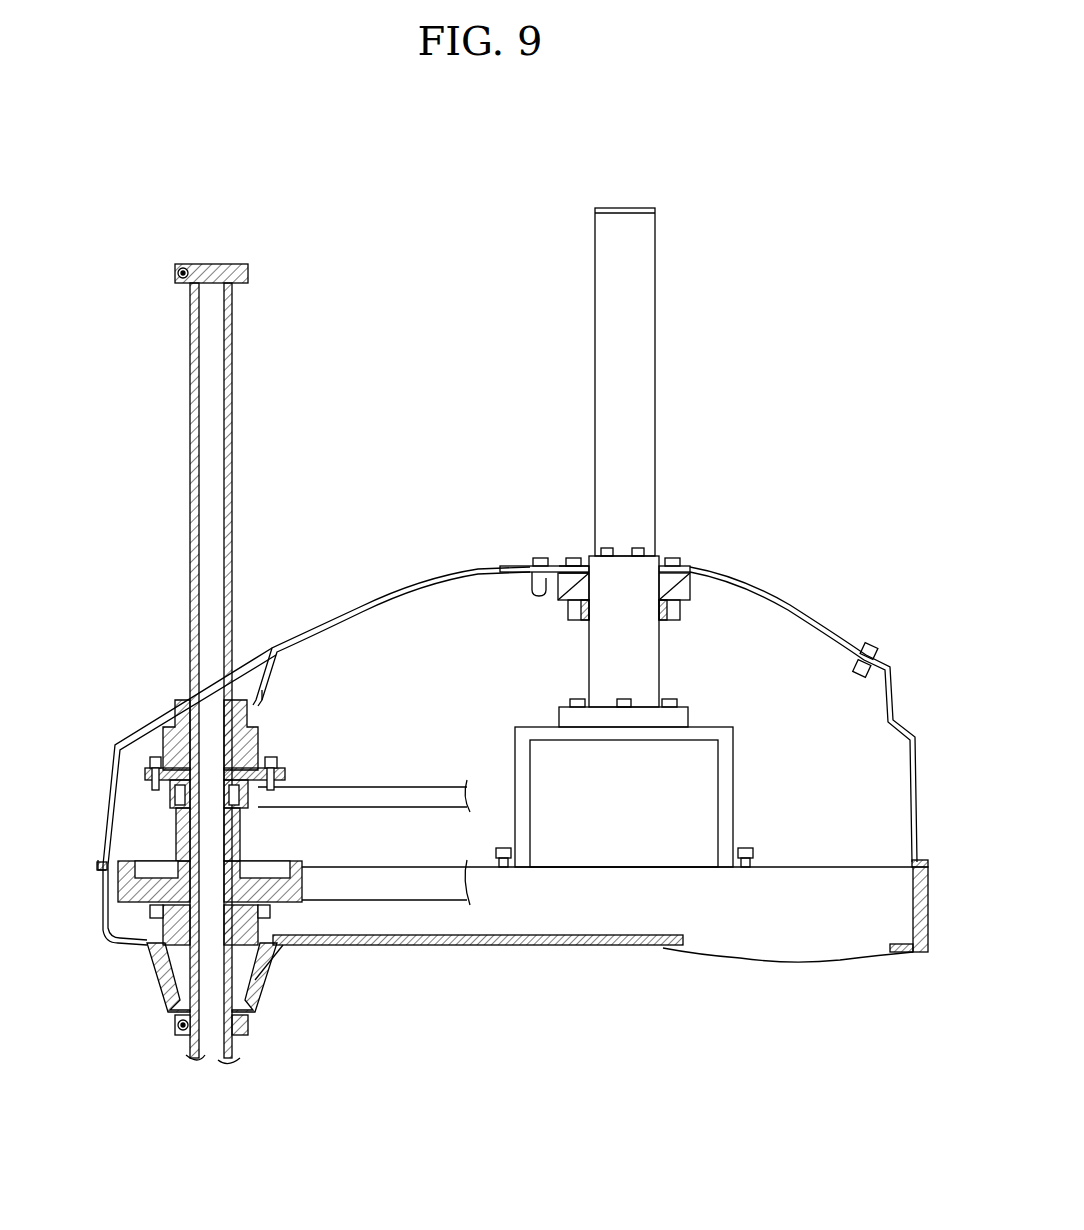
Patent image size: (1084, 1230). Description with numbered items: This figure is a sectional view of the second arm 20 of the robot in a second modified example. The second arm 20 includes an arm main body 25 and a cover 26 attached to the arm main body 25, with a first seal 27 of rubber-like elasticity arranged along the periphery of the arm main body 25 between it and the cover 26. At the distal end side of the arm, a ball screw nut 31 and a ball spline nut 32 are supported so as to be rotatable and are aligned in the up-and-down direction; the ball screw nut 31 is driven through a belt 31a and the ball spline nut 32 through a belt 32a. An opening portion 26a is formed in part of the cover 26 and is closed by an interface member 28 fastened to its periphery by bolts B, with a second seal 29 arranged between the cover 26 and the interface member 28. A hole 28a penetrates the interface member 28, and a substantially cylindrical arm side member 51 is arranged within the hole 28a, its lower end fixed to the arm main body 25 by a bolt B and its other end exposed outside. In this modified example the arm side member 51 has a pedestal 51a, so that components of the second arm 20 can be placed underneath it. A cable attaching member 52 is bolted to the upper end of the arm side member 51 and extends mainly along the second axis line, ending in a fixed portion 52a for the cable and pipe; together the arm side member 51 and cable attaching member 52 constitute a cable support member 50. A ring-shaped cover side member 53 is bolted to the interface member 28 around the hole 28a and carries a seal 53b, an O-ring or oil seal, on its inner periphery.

The second arm 20 is at (355, 592).
The arm main body 25 is at (930, 935).
The cover 26 is at (917, 735).
The opening portion 26a is at (540, 585).
The first seal 27 is at (102, 865).
The interface member 28 is at (785, 603).
The hole 28a is at (580, 566).
The second seal 29 is at (545, 565).
The ball screw nut 31 is at (259, 727).
The belt 31a is at (425, 787).
The ball spline nut 32 is at (118, 882).
The belt 32a is at (425, 895).
The cable support member 50 is at (656, 533).
The arm side member 51 is at (660, 645).
The pedestal 51a is at (735, 748).
The cable attaching member 52 is at (560, 378).
The fixed portion 52a is at (595, 212).
The cover side member 53 is at (690, 607).
The seal 53b is at (582, 620).
The bolt B is at (608, 548).